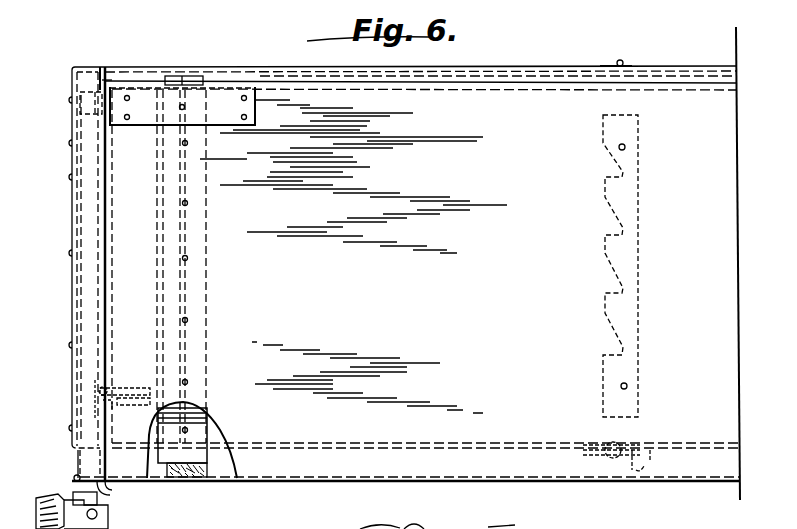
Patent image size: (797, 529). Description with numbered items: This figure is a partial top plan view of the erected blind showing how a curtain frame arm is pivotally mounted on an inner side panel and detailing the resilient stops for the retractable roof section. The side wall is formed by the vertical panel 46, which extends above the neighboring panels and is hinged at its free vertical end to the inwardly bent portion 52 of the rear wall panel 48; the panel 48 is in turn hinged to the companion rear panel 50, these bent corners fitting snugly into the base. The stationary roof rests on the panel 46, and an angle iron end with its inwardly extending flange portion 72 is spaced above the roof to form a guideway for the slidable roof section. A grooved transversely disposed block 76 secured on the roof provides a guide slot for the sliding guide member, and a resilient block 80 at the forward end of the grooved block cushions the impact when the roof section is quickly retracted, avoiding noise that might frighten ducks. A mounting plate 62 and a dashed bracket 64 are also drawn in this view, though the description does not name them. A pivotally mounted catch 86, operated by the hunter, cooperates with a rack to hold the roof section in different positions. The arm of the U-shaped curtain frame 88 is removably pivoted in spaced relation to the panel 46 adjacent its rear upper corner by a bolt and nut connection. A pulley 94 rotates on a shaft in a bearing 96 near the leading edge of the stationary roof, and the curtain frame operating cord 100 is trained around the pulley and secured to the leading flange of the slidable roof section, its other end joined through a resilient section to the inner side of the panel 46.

The vertical panel 46 is at (73, 300).
The vertically disposed panel 48 is at (280, 67).
The vertically disposed panel 50 is at (653, 50).
The inwardly bent portion 52 is at (72, 81).
The mounting plate 62 is at (233, 120).
The bracket 64 is at (627, 276).
The inwardly extending flange portion 72 is at (99, 67).
The transversely disposed block 76 is at (190, 78).
The resilient block 80 is at (190, 478).
The pivotally mounted catch 86 is at (636, 470).
The U-shaped curtain frame 88 is at (112, 495).
The pulley 94 is at (100, 393).
The bearing 96 is at (95, 418).
The curtain frame operating cord 100 is at (80, 451).